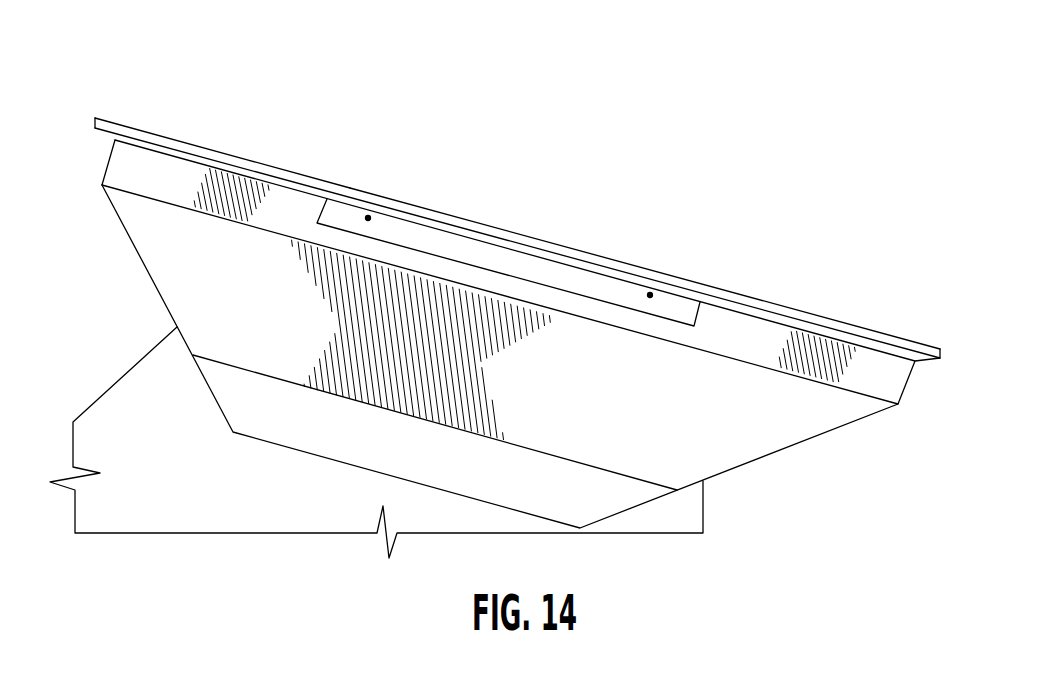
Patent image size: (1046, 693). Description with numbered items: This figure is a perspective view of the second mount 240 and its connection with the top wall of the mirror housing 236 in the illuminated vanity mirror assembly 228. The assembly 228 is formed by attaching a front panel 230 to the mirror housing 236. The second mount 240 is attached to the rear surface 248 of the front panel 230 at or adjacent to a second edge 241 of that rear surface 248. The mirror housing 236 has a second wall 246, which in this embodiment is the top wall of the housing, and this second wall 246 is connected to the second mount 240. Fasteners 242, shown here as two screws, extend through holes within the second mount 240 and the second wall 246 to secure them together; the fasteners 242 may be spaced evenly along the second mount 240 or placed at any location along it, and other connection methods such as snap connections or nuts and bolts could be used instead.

The illuminated vanity mirror assembly 228 is at (775, 208).
The front panel 230 is at (241, 157).
The mirror housing 236 is at (807, 442).
The second mount 240 is at (463, 247).
The second edge 241 is at (303, 173).
The fasteners 242 is at (368, 216).
The second wall 246 is at (752, 332).
The rear surface 248 is at (107, 143).